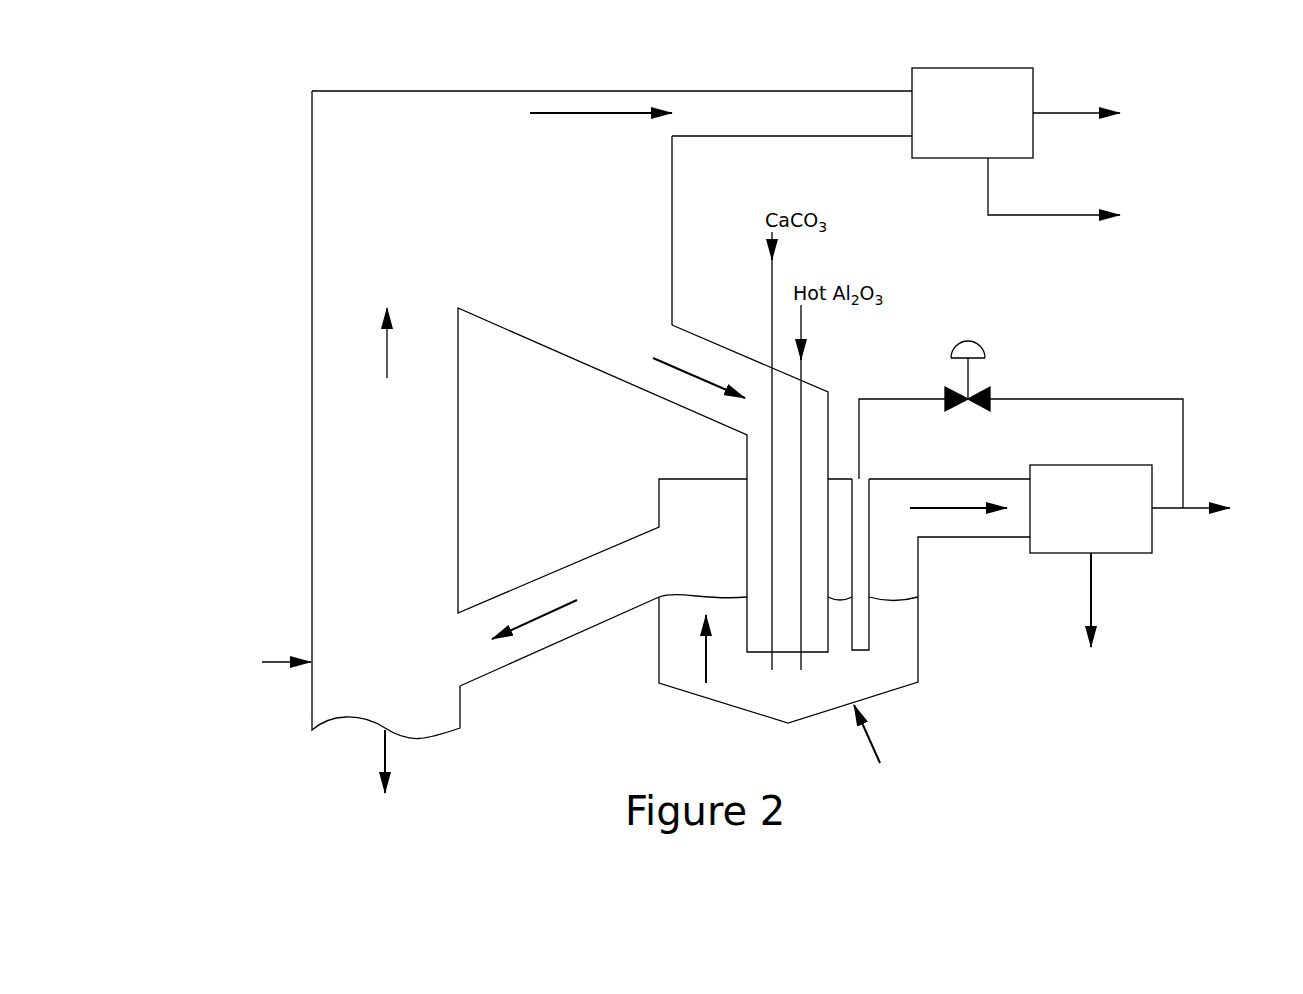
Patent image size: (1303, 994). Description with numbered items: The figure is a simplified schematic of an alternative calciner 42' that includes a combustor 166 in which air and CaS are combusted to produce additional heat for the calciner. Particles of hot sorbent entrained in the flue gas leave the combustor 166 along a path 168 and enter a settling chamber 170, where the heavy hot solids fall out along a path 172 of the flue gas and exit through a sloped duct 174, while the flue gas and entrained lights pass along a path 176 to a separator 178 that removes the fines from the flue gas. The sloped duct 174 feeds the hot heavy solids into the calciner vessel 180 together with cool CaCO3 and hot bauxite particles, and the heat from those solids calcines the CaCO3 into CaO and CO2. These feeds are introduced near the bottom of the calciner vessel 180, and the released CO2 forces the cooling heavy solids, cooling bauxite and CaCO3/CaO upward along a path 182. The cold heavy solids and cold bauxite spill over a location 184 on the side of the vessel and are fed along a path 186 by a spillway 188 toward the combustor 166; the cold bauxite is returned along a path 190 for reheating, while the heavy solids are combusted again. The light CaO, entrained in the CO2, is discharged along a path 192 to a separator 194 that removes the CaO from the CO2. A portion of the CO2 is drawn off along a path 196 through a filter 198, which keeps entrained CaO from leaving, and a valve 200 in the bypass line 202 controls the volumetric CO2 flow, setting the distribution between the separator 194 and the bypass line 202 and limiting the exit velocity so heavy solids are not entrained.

The calciner 42' is at (196, 139).
The combustor 166 is at (312, 500).
The path 168 is at (387, 358).
The settling chamber 170 is at (312, 283).
The path 172 is at (670, 362).
The sloped duct 174 is at (630, 378).
The path 176 is at (557, 115).
The separator 178 is at (950, 158).
The calciner vessel 180 is at (740, 712).
The path 182 is at (703, 670).
The location 184 is at (619, 582).
The path 186 is at (523, 625).
The spillway 188 is at (487, 677).
The path 190 is at (385, 745).
The path 192 is at (938, 512).
The separator 194 is at (1152, 540).
The path 196 is at (873, 400).
The filter 198 is at (860, 652).
The valve 200 is at (973, 407).
The bypass line 202 is at (1183, 420).